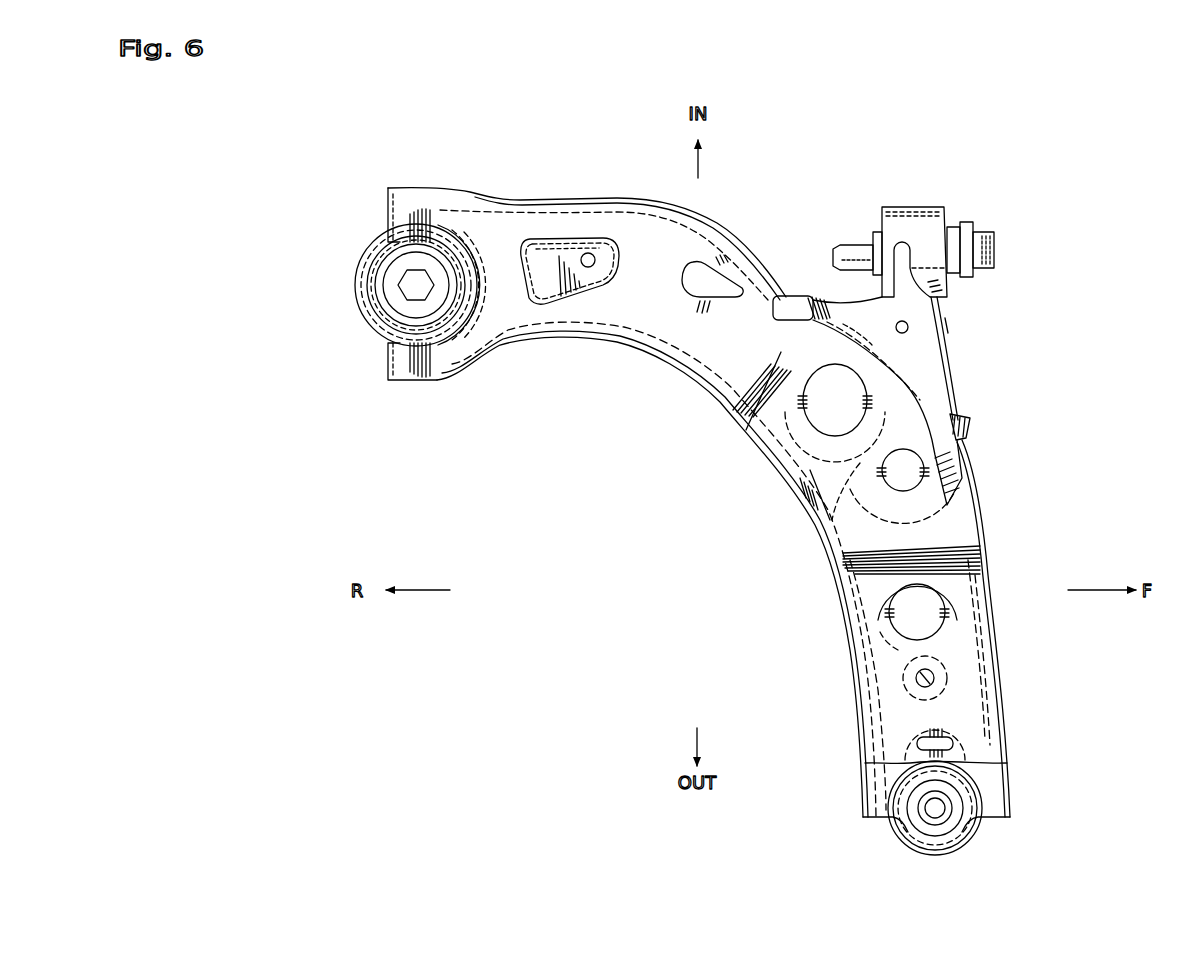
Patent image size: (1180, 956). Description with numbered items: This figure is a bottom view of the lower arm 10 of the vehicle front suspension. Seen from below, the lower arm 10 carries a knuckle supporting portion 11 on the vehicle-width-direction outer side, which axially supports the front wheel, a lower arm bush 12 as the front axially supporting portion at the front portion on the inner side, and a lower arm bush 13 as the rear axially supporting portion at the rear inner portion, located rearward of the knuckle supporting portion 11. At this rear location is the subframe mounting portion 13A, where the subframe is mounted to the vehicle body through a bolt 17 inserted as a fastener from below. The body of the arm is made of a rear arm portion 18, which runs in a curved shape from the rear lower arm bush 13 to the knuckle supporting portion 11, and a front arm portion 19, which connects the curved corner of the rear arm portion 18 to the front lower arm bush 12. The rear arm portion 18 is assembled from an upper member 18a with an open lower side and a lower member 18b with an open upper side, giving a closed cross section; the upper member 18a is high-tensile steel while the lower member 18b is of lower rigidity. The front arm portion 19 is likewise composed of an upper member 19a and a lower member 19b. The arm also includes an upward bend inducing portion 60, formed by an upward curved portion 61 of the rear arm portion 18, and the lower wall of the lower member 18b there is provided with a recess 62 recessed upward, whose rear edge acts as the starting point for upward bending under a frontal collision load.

The lower arm 10 is at (989, 489).
The knuckle supporting portion 11 is at (903, 822).
The lower arm bush 12 is at (910, 205).
The lower arm bush 13 is at (358, 282).
The subframe mounting portion 13A is at (416, 285).
The bolt 17 is at (397, 293).
The rear arm portion 18 is at (714, 409).
The upper member 18a is at (750, 440).
The lower member 18b is at (808, 477).
The front arm portion 19 is at (955, 355).
The upper member 19a is at (962, 396).
The lower member 19b is at (926, 336).
The upward bend inducing portion 60 is at (586, 222).
The upward curved portion 61 is at (567, 248).
The recess 62 is at (543, 292).